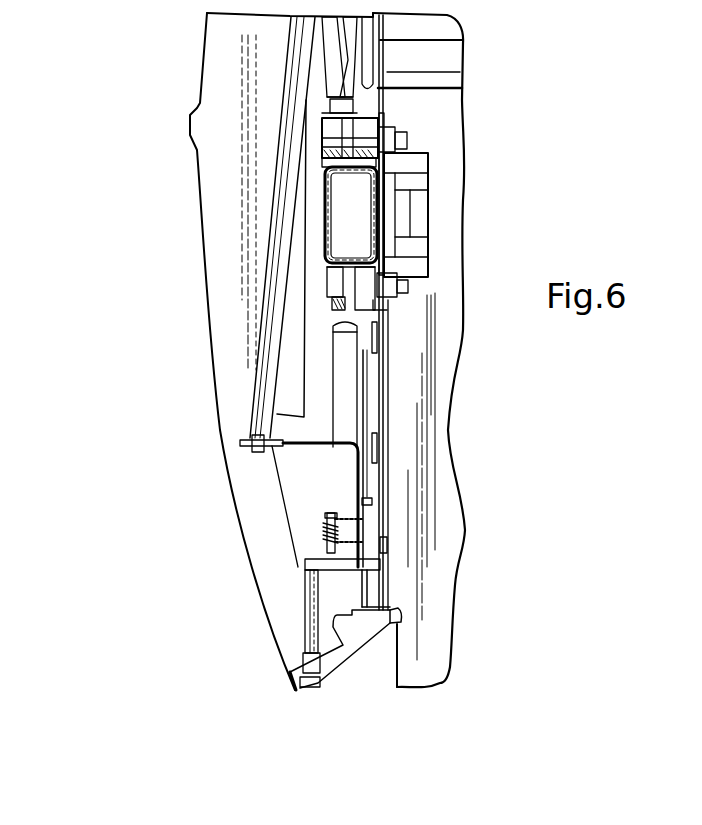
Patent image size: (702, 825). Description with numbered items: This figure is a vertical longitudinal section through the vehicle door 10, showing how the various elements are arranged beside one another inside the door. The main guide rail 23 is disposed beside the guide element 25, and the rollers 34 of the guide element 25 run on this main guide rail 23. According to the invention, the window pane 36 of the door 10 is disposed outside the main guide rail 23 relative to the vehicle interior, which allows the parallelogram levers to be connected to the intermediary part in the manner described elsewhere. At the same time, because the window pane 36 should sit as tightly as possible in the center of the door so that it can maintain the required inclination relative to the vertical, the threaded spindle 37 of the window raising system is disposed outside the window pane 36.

The door 10 is at (245, 557).
The main guide rail 23 is at (332, 212).
The guide element 25 is at (400, 211).
The rollers 34 is at (340, 133).
The window pane 36 is at (294, 340).
The threaded spindle 37 is at (263, 388).